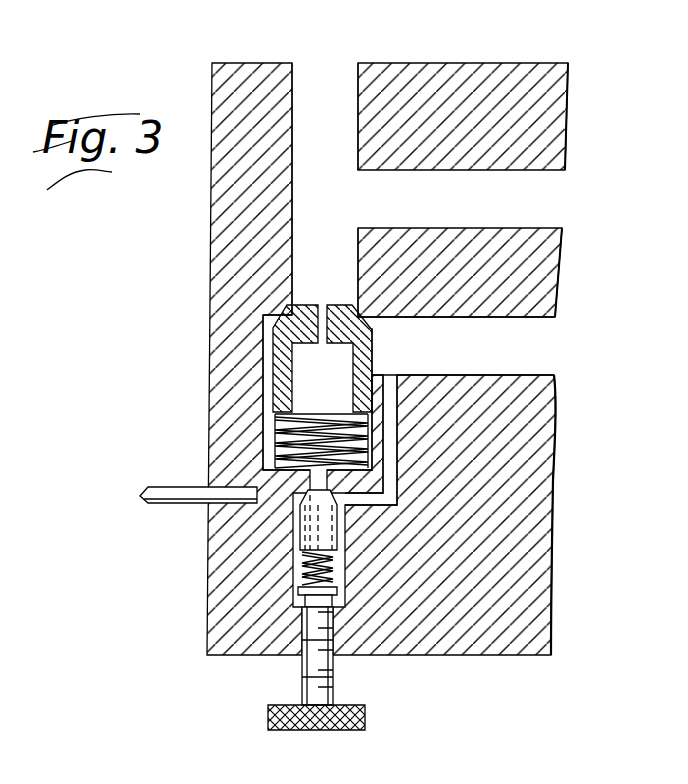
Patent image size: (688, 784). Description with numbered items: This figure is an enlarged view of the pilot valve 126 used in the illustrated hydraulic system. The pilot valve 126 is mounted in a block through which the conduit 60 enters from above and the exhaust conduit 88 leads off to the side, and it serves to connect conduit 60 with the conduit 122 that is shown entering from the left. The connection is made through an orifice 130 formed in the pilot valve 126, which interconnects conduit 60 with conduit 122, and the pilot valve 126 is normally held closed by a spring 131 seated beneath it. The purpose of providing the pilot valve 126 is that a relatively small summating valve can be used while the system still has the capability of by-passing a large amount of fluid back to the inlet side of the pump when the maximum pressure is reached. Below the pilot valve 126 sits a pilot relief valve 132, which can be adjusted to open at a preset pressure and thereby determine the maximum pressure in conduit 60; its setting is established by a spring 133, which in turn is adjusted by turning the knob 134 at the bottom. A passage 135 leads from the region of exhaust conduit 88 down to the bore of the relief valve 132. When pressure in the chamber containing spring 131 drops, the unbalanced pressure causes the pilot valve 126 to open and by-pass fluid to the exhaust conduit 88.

The conduit 60 is at (319, 86).
The exhaust conduit 88 is at (528, 344).
The conduit 122 is at (165, 496).
The pilot valve 126 is at (268, 405).
The orifice 130 is at (318, 338).
The spring 131 is at (318, 432).
The pilot relief valve 132 is at (300, 521).
The spring 133 is at (312, 560).
The knob 134 is at (360, 716).
The passage 135 is at (395, 405).